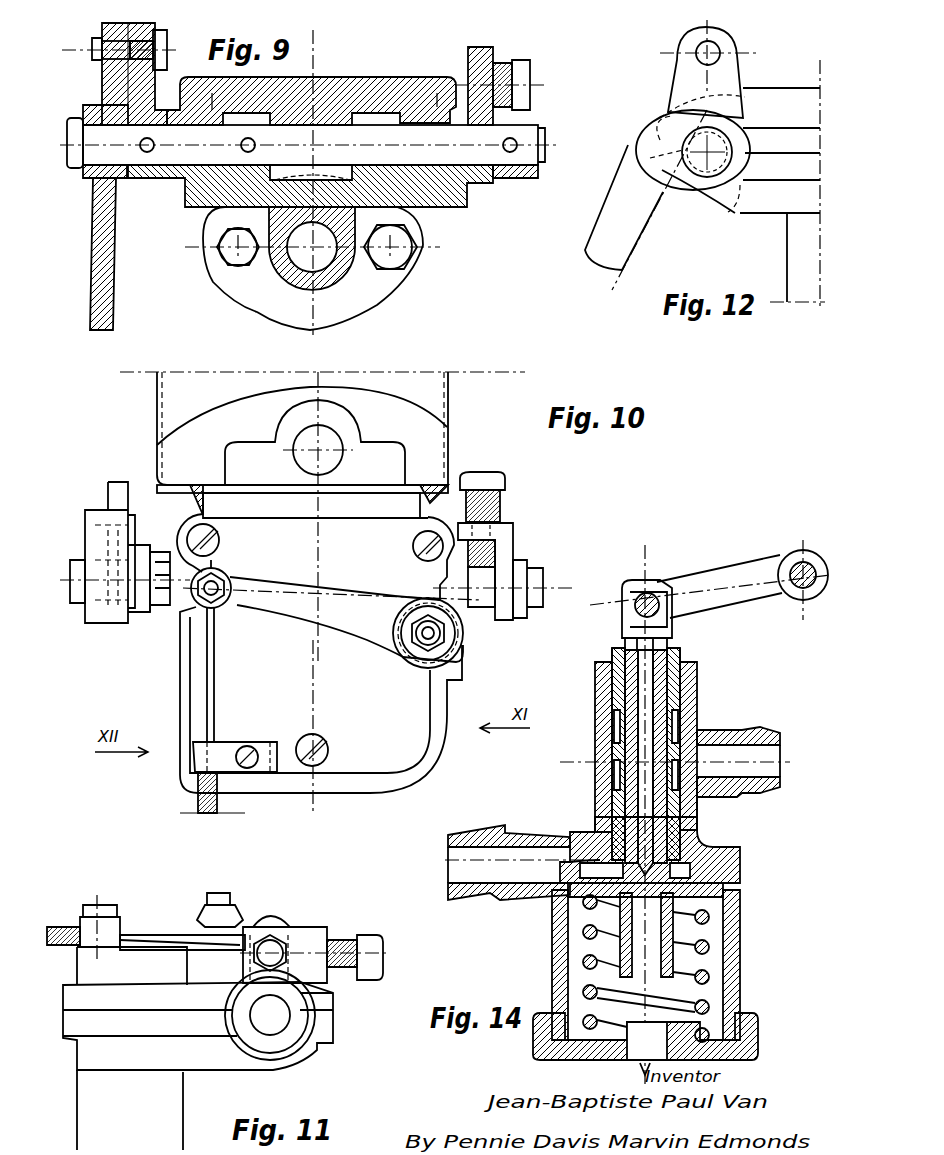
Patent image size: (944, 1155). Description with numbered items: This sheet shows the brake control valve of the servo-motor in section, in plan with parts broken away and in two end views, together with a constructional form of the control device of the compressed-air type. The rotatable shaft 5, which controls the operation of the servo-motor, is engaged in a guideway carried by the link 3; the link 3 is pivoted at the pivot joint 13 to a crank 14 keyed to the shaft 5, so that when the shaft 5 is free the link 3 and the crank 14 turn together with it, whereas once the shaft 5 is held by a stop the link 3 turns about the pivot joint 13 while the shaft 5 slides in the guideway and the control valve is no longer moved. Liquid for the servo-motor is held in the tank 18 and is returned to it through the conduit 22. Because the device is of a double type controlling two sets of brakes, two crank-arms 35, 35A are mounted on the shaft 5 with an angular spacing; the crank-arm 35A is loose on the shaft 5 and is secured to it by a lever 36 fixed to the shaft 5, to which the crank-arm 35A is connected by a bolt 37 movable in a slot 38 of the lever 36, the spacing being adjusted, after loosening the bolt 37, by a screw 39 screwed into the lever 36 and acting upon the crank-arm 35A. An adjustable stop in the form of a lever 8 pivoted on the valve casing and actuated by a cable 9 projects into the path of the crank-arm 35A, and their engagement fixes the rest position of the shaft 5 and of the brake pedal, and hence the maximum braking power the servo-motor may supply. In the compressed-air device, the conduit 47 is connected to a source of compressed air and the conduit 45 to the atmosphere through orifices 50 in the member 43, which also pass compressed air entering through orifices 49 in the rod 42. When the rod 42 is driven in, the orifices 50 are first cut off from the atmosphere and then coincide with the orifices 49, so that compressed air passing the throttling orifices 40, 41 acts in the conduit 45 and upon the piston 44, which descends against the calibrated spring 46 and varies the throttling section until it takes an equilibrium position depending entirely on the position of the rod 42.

In FIG. 9, the link 3 is at (100, 252).
In FIG. 12, the link 3 is at (622, 188).
In FIG. 10, the link 3 is at (105, 620).
In FIG. 9, the shaft 5 is at (85, 160).
In FIG. 12, the shaft 5 is at (715, 165).
In FIG. 10, the shaft 5 is at (78, 562).
In FIG. 10, the adjustable stop lever 8 is at (475, 617).
In FIG. 11, the adjustable stop lever 8 is at (195, 933).
In FIG. 10, the cable 9 is at (200, 795).
In FIG. 11, the cable 9 is at (62, 925).
In FIG. 9, the pivot joint 13 is at (100, 52).
In FIG. 12, the pivot joint 13 is at (718, 48).
In FIG. 9, the crank 14 is at (145, 90).
In FIG. 12, the crank 14 is at (735, 83).
In FIG. 10, the crank 14 is at (138, 600).
In FIG. 10, the tank 18 is at (175, 405).
In FIG. 9, the conduit 22 is at (325, 260).
In FIG. 9, the crank-arm 35 is at (270, 118).
In FIG. 9, the crank-arm 35A is at (478, 185).
In FIG. 10, the crank-arm 35A is at (480, 597).
In FIG. 11, the crank-arm 35A is at (272, 920).
In FIG. 9, the lever 36 is at (530, 178).
In FIG. 10, the lever 36 is at (505, 536).
In FIG. 11, the lever 36 is at (322, 934).
In FIG. 9, the bolt 37 is at (530, 72).
In FIG. 10, the bolt 37 is at (543, 572).
In FIG. 11, the slot 38 is at (283, 945).
In FIG. 10, the screw 39 is at (500, 483).
In FIG. 11, the screw 39 is at (370, 975).
In FIG. 14, the orifice 40 is at (665, 730).
In FIG. 14, the orifice 41 is at (680, 748).
In FIG. 14, the rod 42 is at (665, 675).
In FIG. 14, the member 43 is at (710, 840).
In FIG. 14, the piston 44 is at (735, 910).
In FIG. 14, the conduit 45 is at (482, 832).
In FIG. 14, the calibrated spring 46 is at (710, 975).
In FIG. 14, the conduit 47 is at (760, 778).
In FIG. 14, the orifices 49 is at (595, 858).
In FIG. 14, the orifices 50 is at (550, 900).